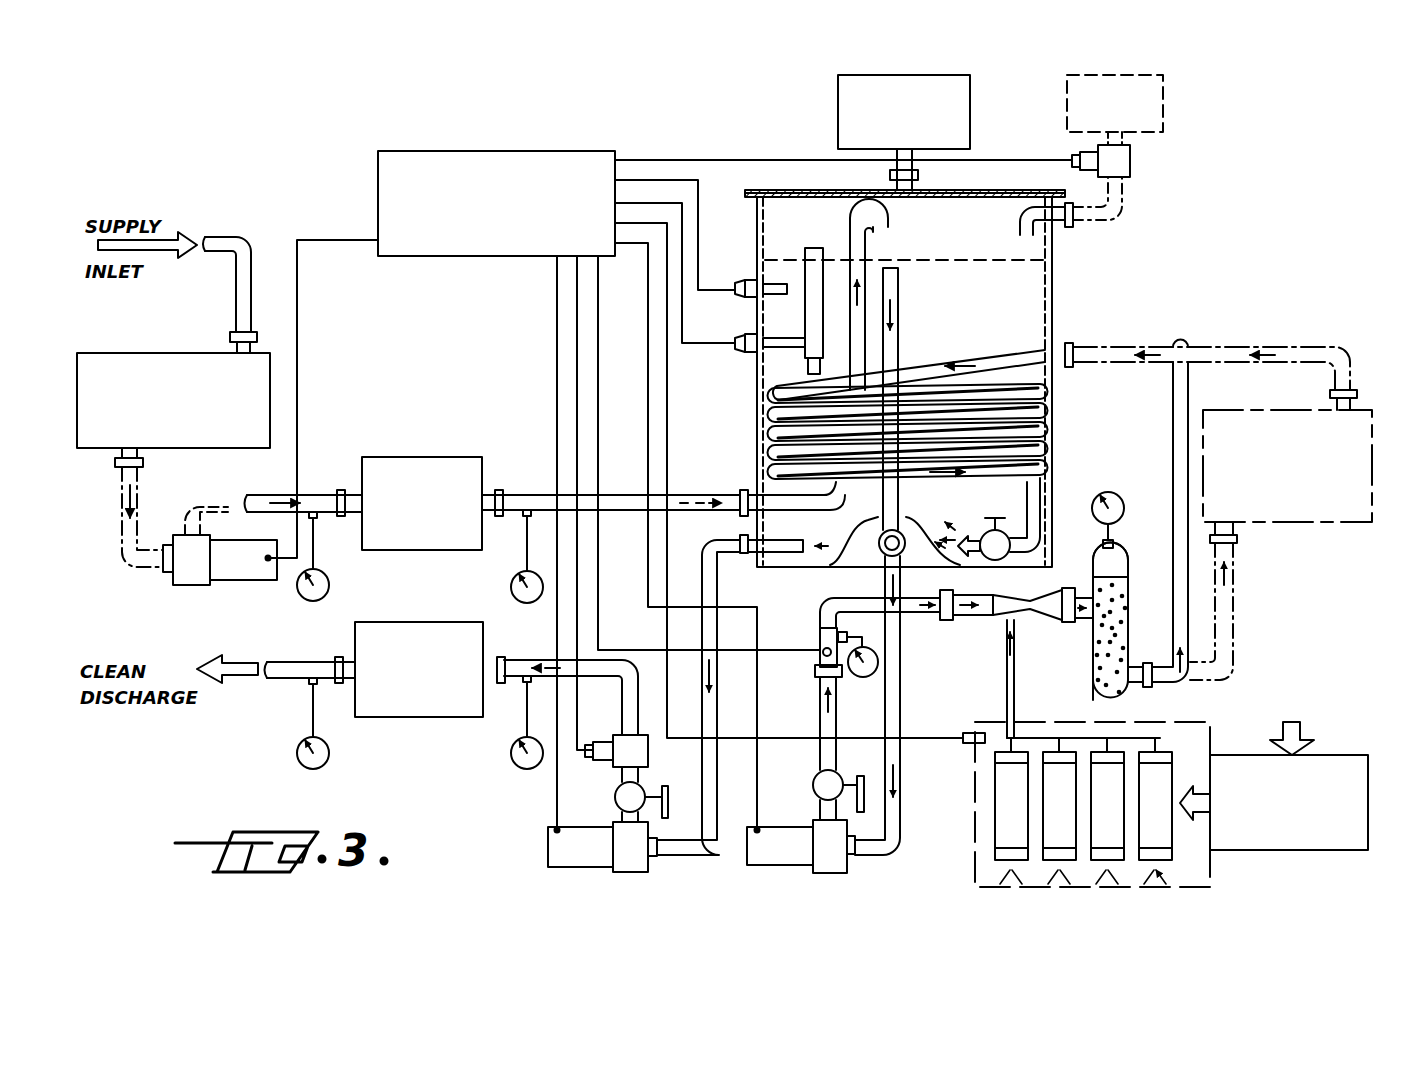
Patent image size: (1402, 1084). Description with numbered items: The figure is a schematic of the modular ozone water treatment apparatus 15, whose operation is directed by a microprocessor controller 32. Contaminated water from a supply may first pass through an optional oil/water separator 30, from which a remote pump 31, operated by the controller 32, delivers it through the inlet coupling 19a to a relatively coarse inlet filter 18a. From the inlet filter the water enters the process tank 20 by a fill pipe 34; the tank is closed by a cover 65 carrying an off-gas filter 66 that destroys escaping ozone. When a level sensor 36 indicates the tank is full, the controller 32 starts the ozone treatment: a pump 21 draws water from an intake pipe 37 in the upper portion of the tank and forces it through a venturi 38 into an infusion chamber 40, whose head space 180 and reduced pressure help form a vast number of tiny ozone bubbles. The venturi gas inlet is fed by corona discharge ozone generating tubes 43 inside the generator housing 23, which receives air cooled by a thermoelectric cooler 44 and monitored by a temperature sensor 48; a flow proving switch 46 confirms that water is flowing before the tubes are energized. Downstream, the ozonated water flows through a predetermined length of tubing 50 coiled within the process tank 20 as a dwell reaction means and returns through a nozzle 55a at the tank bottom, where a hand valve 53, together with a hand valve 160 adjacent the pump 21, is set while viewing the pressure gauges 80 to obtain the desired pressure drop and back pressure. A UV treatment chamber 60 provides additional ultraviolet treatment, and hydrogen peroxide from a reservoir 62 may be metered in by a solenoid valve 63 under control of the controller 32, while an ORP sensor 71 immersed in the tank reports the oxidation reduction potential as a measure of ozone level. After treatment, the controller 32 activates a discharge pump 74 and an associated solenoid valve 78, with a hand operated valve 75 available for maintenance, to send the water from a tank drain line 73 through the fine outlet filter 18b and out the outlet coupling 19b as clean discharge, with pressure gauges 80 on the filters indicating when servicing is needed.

The modular ozone water treatment apparatus 15 is at (352, 126).
The controller 32 is at (514, 152).
The oil/water separator 30 is at (178, 353).
The remote pump 31 is at (230, 572).
The inlet coupling 19a is at (344, 488).
The inlet filter 18a is at (427, 453).
The outlet coupling 19b is at (339, 660).
The outlet filter 18b is at (438, 716).
The pressure gauges 80 is at (330, 585).
The process tank 20 is at (1060, 262).
The cover 65 is at (793, 188).
The off-gas filter 66 is at (838, 105).
The reservoir 62 is at (1163, 80).
The solenoid valve 63 is at (1130, 164).
The level sensor 36 is at (820, 248).
The oxidation reduction potential sensor 71 is at (764, 298).
The fill pipe 34 is at (888, 220).
The intake pipe 37 is at (899, 268).
The predetermined length of tubing 50 is at (1047, 378).
The hand valve 53 is at (1012, 532).
The nozzle 55a is at (937, 521).
The drain pipe 73 is at (750, 556).
The solenoid valve 78 is at (650, 754).
The hand operated valve 75 is at (615, 797).
The discharge pump 74 is at (578, 862).
The venturi 38 is at (997, 620).
The infusion chamber 40 is at (1124, 624).
The head space 180 is at (1118, 568).
The UV treatment chamber 60 is at (1267, 518).
The flow proving switch 46 is at (820, 656).
The hand valve 160 is at (814, 785).
The pump 21 is at (800, 860).
The temperature sensor 48 is at (972, 733).
The generator housing 23 is at (978, 849).
The corona discharge ozone generating tubes 43 is at (1050, 800).
The thermoelectric cooler 44 is at (1294, 848).